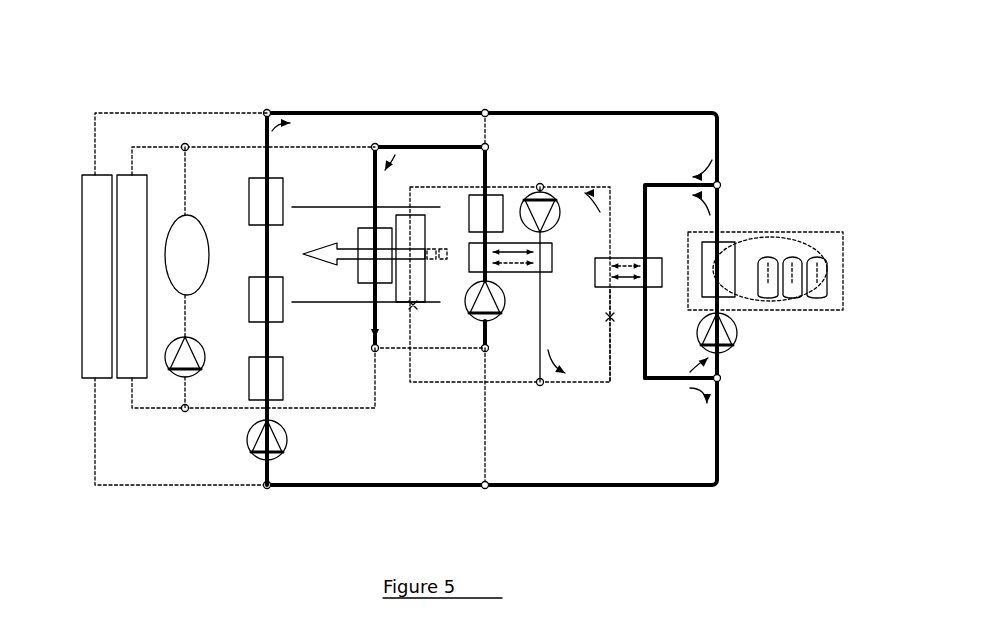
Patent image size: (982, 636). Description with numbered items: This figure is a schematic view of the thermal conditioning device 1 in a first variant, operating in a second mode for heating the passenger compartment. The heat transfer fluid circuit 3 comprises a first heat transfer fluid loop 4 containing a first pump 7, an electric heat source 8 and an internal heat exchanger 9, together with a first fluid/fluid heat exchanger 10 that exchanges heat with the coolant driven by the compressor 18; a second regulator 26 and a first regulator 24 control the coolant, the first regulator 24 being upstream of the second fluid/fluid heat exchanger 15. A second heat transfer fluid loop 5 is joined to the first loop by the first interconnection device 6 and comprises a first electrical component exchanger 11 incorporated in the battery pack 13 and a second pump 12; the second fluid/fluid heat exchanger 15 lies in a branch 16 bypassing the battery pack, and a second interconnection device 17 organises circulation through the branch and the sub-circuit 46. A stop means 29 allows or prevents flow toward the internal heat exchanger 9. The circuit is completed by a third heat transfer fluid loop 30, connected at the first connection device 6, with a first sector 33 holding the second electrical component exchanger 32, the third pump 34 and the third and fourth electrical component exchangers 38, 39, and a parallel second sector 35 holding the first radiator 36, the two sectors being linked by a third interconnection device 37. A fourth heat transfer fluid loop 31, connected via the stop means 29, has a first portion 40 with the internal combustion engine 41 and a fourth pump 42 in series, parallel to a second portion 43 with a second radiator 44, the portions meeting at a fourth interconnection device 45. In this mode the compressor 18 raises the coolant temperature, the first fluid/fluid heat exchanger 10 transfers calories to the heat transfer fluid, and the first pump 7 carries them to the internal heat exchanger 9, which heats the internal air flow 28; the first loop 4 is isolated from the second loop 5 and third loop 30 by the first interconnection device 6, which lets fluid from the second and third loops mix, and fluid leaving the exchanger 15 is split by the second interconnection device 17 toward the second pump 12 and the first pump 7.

The thermal conditioning device 1 is at (757, 120).
The heat transfer fluid circuit 3 is at (420, 103).
The first heat transfer fluid loop 4 is at (437, 357).
The second heat transfer fluid loop 5 is at (653, 103).
The first interconnection device 6 is at (482, 110).
The first pump 7 is at (505, 298).
The electric heat source 8 is at (490, 205).
The internal heat exchanger 9 is at (362, 228).
The first fluid/fluid heat exchanger 10 is at (552, 270).
The first electrical component exchanger 11 is at (728, 272).
The second pump 12 is at (740, 335).
The battery pack 13 is at (770, 263).
The second fluid/fluid heat exchanger 15 is at (660, 270).
The branch 16 is at (665, 183).
The second interconnection device 17 is at (722, 385).
The compressor 18 is at (562, 224).
The first regulator 24 is at (623, 310).
The second regulator 26 is at (478, 330).
The internal air flow 28 is at (332, 258).
The stop means 29 is at (375, 147).
The third heat transfer fluid loop 30 is at (288, 108).
The fourth heat transfer fluid loop 31 is at (215, 415).
The second electrical component exchanger 32 is at (283, 178).
The first sector 33 is at (252, 235).
The third pump 34 is at (287, 440).
The second sector 35 is at (93, 148).
The first radiator 36 is at (86, 282).
The third interconnection device 37 is at (265, 112).
The third electrical component exchanger 38 is at (249, 305).
The fourth electrical component exchanger 39 is at (283, 387).
The first portion 40 is at (185, 322).
The internal combustion engine 41 is at (176, 265).
The fourth pump 42 is at (203, 367).
The second portion 43 is at (130, 400).
The second radiator 44 is at (121, 268).
The fourth interconnection device 45 is at (185, 147).
The sub-circuit 46 is at (655, 362).